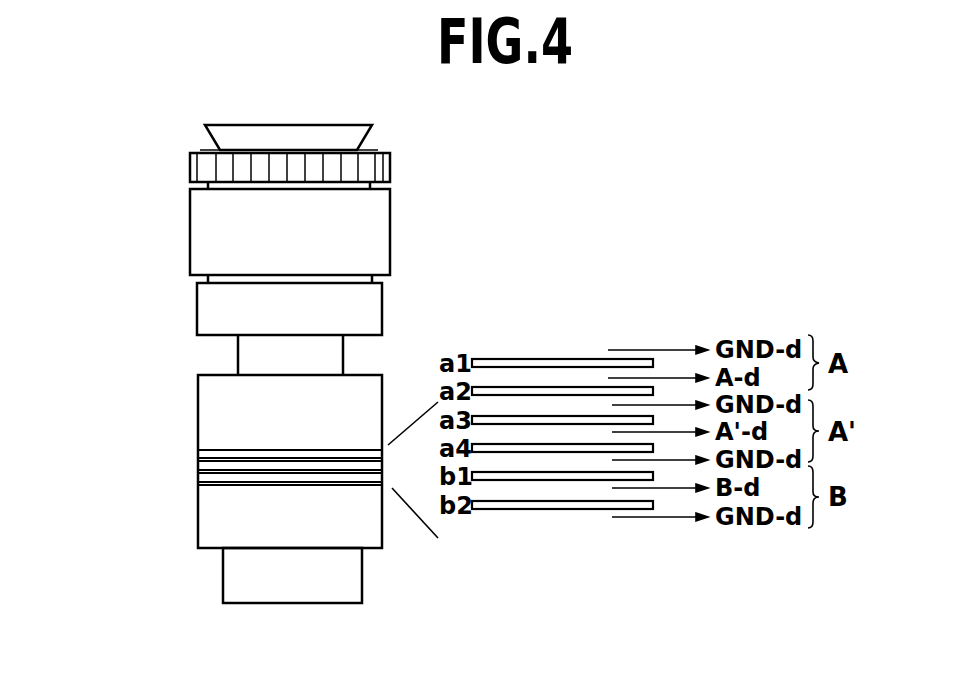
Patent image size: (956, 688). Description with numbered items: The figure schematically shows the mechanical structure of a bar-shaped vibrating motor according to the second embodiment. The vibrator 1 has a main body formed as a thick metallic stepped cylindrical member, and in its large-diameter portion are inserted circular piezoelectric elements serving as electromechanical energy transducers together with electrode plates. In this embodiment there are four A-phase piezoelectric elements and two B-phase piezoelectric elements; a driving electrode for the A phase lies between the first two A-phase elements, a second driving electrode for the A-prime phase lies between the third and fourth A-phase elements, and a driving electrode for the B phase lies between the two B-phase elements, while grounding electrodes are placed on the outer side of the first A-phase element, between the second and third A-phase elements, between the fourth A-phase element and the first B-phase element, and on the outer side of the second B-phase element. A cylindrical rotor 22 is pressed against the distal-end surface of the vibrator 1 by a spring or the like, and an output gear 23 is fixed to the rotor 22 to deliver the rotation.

The vibrator 1 is at (102, 302).
The rotor 22 is at (365, 236).
The output gear 23 is at (390, 170).